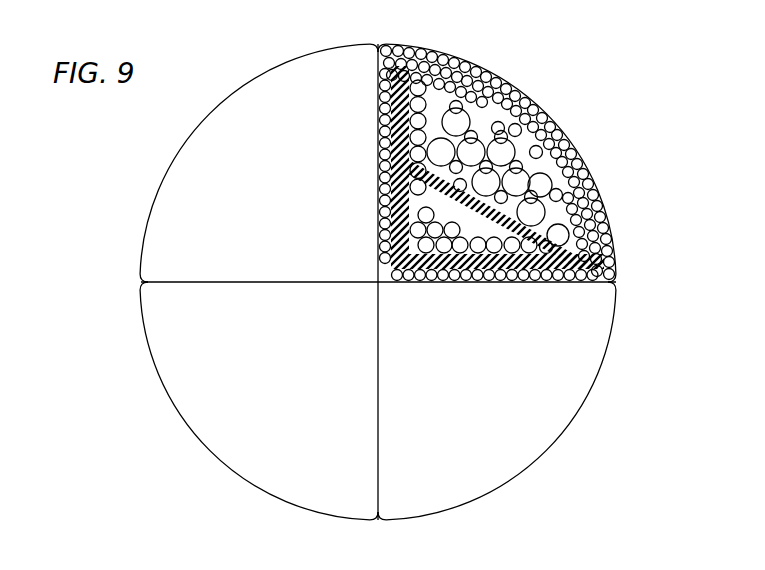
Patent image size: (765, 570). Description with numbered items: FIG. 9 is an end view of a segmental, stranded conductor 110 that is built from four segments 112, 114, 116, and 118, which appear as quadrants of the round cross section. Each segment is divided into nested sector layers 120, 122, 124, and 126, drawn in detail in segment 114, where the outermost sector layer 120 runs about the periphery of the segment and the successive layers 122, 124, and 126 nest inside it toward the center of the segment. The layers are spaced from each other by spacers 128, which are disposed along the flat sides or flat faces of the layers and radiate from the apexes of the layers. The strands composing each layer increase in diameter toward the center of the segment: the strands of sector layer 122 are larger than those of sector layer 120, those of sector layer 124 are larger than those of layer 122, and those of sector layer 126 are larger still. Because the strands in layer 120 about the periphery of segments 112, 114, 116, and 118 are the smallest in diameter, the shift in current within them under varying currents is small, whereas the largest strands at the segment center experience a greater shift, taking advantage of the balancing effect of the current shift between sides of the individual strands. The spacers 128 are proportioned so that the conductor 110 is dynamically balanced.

The segmental stranded conductor 110 is at (388, 40).
The segment 112 is at (243, 84).
The segment 114 is at (586, 172).
The segment 116 is at (609, 353).
The segment 118 is at (149, 345).
The sector layer 120 is at (384, 77).
The sector layer 122 is at (406, 119).
The sector layer 124 is at (425, 137).
The sector layer 126 is at (440, 157).
The spacers 128 is at (380, 226).